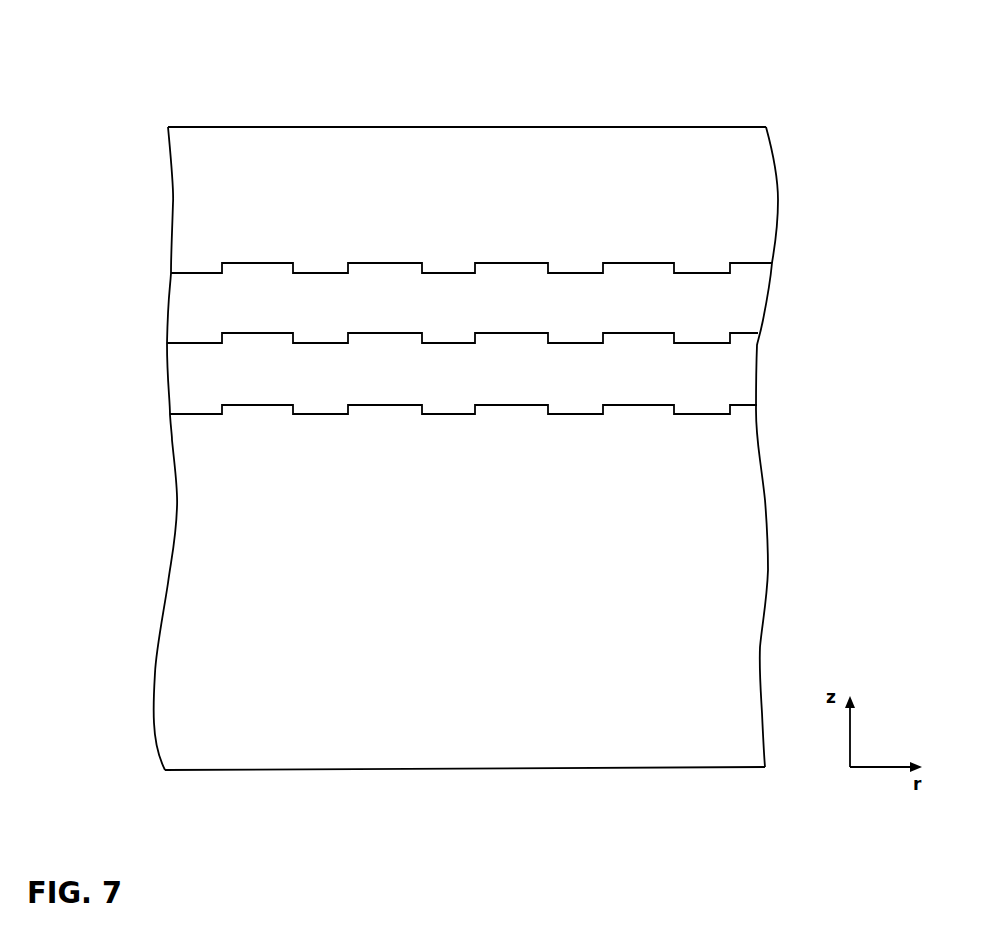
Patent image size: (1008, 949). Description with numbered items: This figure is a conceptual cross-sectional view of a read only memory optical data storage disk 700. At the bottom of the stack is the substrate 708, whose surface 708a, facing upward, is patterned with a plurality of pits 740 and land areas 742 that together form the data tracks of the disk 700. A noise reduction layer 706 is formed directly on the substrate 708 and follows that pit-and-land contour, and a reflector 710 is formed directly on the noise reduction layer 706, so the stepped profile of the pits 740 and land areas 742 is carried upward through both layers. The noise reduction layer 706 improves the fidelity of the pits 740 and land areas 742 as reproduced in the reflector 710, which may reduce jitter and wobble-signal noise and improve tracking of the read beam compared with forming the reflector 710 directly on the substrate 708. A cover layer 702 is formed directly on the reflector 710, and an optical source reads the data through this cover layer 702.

The ROM optical data storage disk 700 is at (68, 99).
The cover layer 702 is at (185, 201).
The reflector 710 is at (190, 306).
The noise reduction layer 706 is at (192, 379).
The substrate 708 is at (190, 582).
The surface of substrate 708a is at (750, 406).
The land areas 742 is at (663, 403).
The pits 740 is at (705, 414).